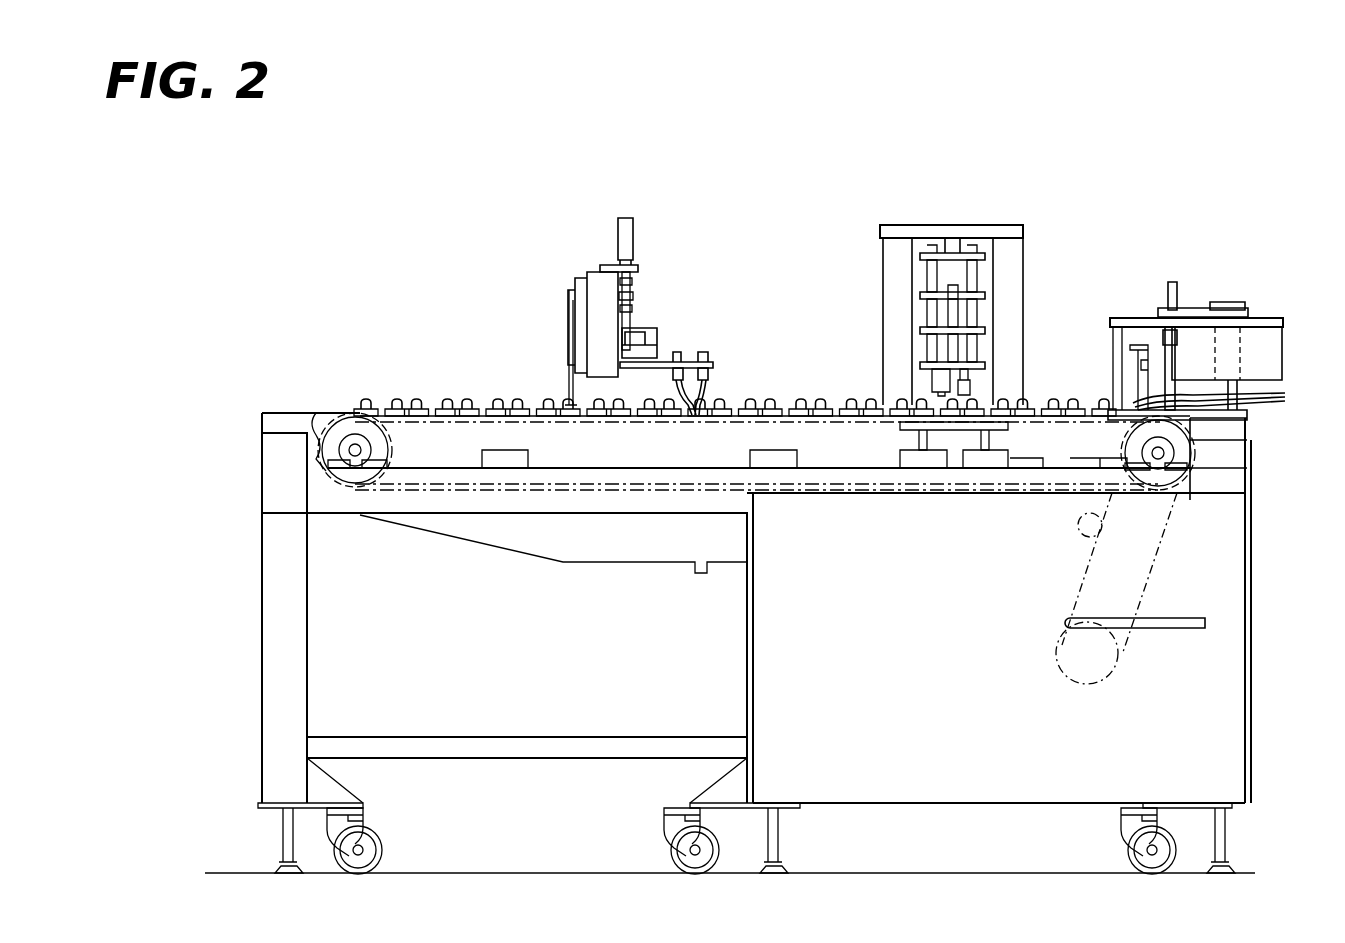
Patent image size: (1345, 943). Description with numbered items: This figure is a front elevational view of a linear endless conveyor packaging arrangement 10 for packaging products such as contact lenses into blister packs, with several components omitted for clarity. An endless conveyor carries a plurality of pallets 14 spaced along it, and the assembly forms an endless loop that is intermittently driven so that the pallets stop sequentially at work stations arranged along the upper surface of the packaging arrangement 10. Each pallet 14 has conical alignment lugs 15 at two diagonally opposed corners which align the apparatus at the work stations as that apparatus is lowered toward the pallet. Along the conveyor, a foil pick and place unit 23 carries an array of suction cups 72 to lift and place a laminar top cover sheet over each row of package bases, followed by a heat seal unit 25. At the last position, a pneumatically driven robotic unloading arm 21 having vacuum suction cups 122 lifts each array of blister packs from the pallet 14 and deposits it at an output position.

The packaging arrangement 10 is at (450, 285).
The pallet 14 is at (431, 405).
The conical alignment lug 15 is at (550, 405).
The robotic unloading arm 21 is at (1220, 258).
The foil pick and place unit 23 is at (672, 268).
The heat seal unit 25 is at (1040, 246).
The suction cups 72 is at (698, 418).
The vacuum suction cups 122 is at (1231, 398).